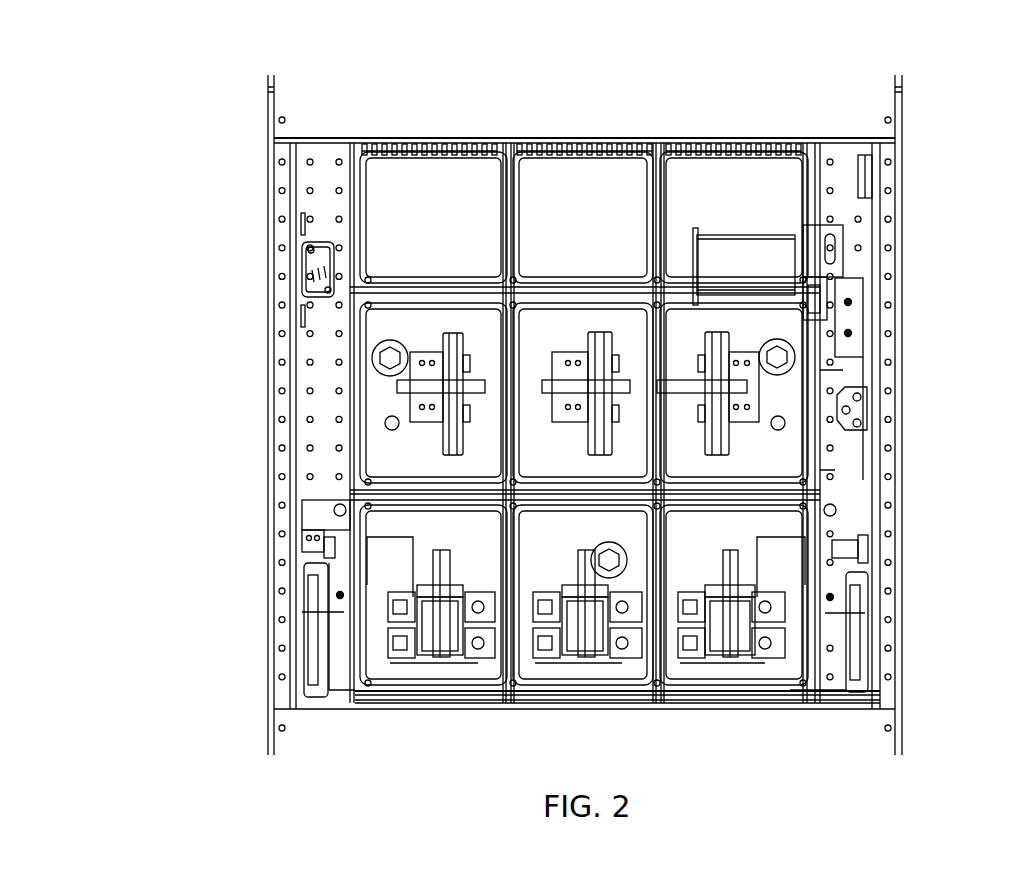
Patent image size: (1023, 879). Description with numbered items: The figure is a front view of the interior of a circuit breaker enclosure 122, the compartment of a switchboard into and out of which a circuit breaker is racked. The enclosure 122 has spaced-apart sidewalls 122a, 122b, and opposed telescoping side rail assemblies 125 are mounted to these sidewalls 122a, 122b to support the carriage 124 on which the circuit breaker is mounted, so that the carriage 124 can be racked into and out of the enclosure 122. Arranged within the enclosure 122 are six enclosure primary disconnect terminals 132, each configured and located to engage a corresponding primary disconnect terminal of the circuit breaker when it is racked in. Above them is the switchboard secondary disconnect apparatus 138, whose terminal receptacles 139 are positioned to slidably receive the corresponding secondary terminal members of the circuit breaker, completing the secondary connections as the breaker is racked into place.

The enclosure 122 is at (182, 90).
The sidewall 122a is at (270, 330).
The sidewall 122b is at (905, 345).
The carriage 124 is at (395, 700).
The telescoping side rail assembly 125 is at (300, 632).
The enclosure primary disconnect terminal 132 is at (450, 355).
The switchboard secondary disconnect apparatus 138 is at (437, 140).
The terminal receptacle 139 is at (378, 160).